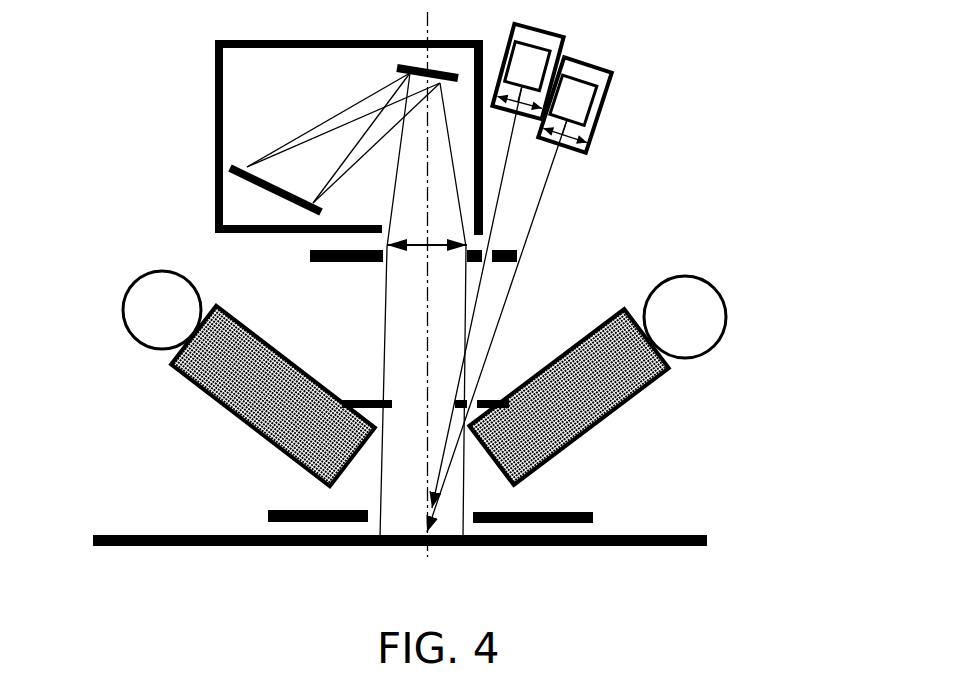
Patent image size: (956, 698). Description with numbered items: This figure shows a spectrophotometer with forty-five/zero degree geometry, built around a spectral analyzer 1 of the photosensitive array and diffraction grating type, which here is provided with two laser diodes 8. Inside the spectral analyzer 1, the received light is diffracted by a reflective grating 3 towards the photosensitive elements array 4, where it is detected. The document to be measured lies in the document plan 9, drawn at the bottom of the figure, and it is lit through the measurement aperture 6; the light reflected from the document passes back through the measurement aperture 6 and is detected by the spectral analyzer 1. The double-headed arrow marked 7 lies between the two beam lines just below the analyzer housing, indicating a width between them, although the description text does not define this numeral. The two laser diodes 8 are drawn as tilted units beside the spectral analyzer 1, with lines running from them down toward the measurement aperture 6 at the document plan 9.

The spectral analyzer 1 is at (480, 187).
The reflective grating 3 is at (397, 69).
The photosensitive elements array 4 is at (260, 180).
The measurement aperture 6 is at (452, 513).
The slit gap width 7 is at (387, 245).
The laser diodes 8 is at (530, 45).
The document plan 9 is at (250, 534).